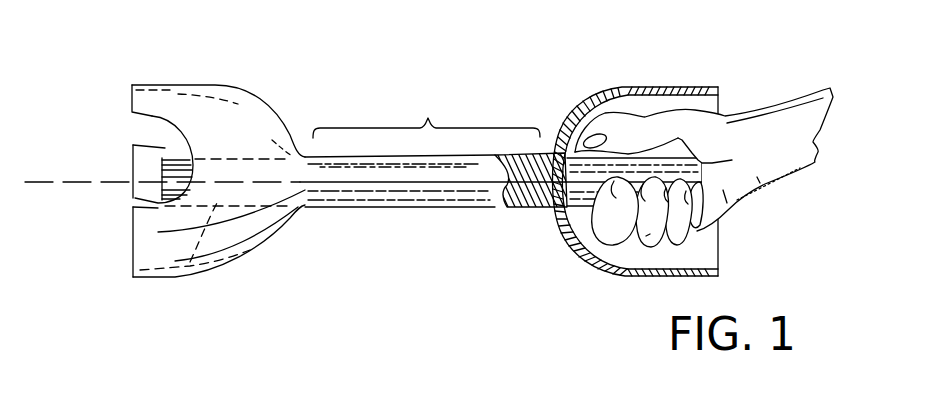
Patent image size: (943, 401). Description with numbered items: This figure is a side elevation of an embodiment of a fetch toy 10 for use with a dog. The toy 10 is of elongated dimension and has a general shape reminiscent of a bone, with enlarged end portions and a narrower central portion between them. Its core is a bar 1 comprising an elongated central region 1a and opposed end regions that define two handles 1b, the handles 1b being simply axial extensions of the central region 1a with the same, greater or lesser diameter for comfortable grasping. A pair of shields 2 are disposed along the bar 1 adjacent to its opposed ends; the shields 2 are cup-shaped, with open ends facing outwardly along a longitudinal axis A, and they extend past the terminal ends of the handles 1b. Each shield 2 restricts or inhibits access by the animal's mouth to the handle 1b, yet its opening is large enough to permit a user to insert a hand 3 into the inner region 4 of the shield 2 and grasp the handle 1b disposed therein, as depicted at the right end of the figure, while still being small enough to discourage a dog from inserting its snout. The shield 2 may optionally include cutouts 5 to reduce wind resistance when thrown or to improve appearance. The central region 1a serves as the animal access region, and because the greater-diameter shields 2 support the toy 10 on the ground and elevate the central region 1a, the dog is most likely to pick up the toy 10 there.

The toy 10 is at (366, 250).
The bar 1 is at (467, 210).
The central region 1a is at (426, 111).
The handles 1b is at (177, 280).
The shields 2 is at (197, 83).
The hand 3 is at (733, 190).
The inner region 4 is at (167, 150).
The cutouts 5 is at (150, 123).
The longitudinal axis A is at (50, 182).